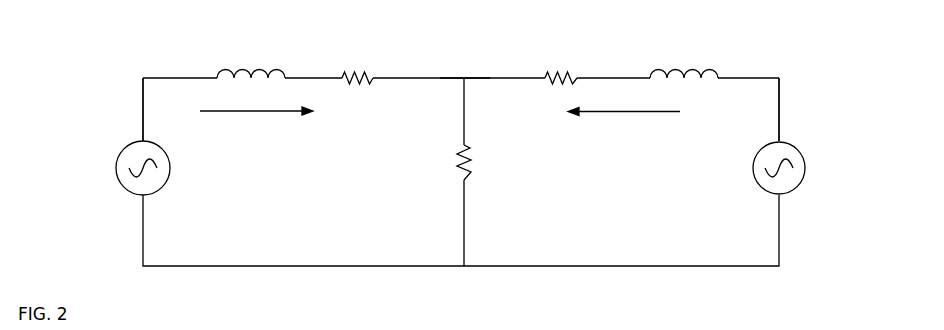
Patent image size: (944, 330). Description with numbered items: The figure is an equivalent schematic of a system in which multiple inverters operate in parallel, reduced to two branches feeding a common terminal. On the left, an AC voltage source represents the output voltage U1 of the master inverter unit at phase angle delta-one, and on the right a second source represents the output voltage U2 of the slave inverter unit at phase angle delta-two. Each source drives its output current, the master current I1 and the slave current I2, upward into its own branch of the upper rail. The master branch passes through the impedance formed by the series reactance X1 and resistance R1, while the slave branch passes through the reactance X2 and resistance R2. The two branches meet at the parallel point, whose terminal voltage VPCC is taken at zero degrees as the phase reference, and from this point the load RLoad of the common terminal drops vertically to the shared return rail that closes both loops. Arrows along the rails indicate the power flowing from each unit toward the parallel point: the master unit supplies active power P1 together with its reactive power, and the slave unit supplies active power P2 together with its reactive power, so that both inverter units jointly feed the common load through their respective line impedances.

The output current of master inverter unit I1 is at (143, 83).
The output current of slave inverter unit I2 is at (779, 83).
The reactance of master inverter unit X1 is at (251, 53).
The reactance of slave inverter unit X2 is at (684, 53).
The resistance of master inverter unit R1 is at (357, 56).
The resistance of slave inverter unit R2 is at (561, 56).
The terminal voltage of parallel point VPCC is at (459, 52).
The load of common terminal RLoad is at (431, 162).
The active power of master inverter unit P1 is at (256, 131).
The active power of slave inverter unit P2 is at (624, 132).
The output voltage of master inverter unit U1 is at (98, 168).
The output voltage of slave inverter unit U2 is at (822, 168).